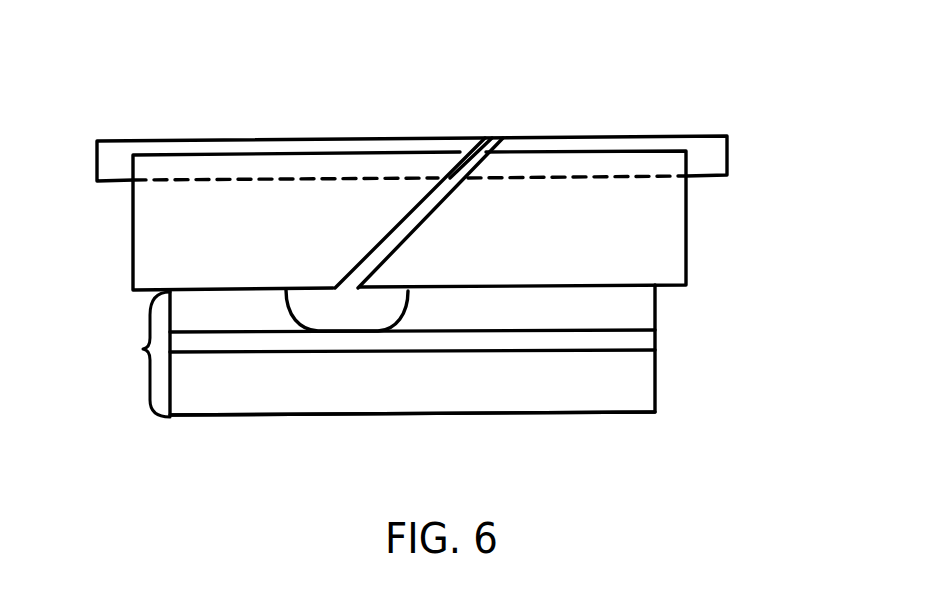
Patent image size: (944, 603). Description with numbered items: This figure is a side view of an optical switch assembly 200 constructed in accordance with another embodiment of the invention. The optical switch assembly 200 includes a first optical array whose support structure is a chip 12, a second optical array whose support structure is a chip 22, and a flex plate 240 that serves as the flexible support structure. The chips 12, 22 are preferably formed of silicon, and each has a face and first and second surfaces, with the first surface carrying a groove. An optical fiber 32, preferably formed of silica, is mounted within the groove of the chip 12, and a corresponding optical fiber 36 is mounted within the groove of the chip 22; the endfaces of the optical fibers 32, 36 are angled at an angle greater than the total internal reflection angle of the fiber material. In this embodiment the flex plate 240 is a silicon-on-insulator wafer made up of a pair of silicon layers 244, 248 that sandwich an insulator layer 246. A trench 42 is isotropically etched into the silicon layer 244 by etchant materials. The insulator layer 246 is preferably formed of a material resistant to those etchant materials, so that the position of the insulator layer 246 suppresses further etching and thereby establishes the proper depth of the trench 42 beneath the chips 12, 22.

The optical switch assembly 200 is at (657, 90).
The optical fiber 32 is at (718, 150).
The optical fiber 36 is at (106, 153).
The chip 12 is at (667, 228).
The chip 22 is at (152, 223).
The trench 42 is at (348, 310).
The flex plate 240 is at (387, 351).
The silicon layer 244 is at (640, 315).
The insulator layer 246 is at (640, 345).
The silicon layer 248 is at (640, 386).